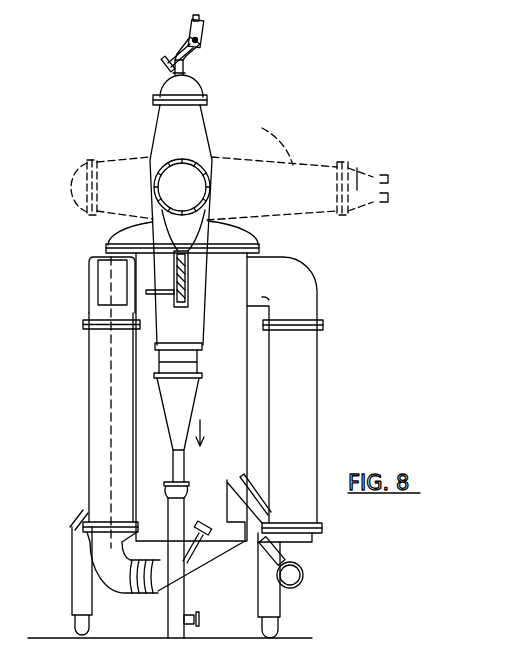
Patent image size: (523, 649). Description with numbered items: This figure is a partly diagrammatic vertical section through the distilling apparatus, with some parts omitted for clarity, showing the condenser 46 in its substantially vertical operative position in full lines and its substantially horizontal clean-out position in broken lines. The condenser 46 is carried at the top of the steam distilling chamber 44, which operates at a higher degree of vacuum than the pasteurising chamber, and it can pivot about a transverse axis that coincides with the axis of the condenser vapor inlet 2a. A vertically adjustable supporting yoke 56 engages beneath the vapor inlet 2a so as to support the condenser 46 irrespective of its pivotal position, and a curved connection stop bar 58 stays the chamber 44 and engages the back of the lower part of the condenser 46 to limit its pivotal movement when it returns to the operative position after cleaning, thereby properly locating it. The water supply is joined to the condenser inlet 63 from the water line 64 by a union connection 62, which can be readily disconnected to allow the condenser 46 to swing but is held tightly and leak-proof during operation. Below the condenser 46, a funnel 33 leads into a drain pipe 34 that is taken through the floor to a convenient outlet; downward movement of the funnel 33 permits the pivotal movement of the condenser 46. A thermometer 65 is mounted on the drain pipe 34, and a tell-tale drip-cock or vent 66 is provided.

The condenser vapor inlet 2a is at (160, 160).
The funnel 33 is at (185, 397).
The drain pipe 34 is at (178, 510).
The steam distilling chamber 44 is at (220, 412).
The condenser 46 is at (200, 135).
The supporting yoke 56 is at (180, 229).
The curved connection stop bar 58 is at (148, 293).
The union connection 62 is at (183, 43).
The condenser inlet 63 is at (187, 67).
The water line 64 is at (203, 23).
The thermometer 65 is at (200, 532).
The tell-tale drip-cock or vent 66 is at (200, 619).